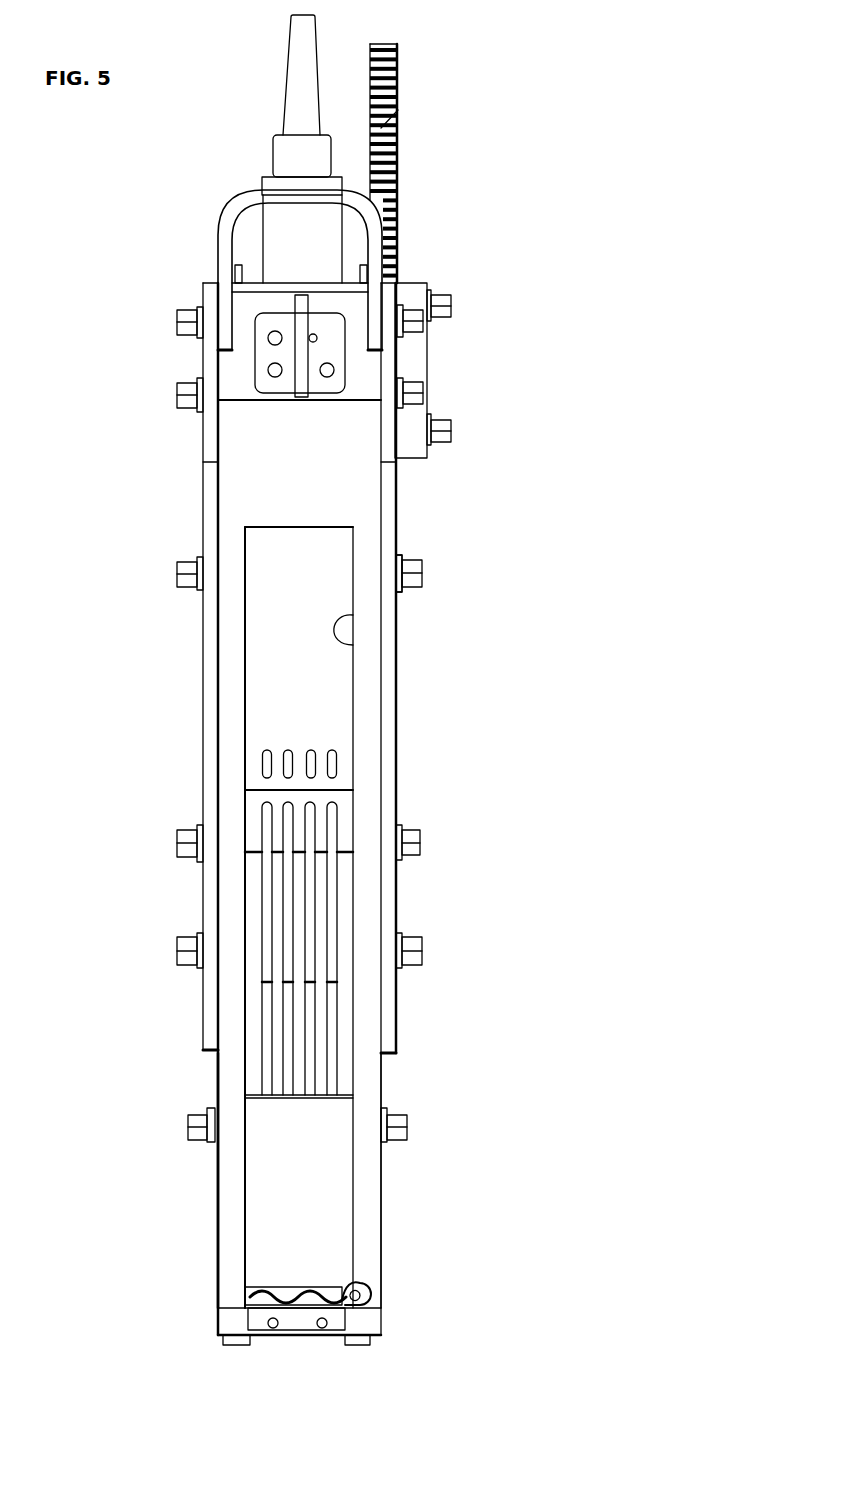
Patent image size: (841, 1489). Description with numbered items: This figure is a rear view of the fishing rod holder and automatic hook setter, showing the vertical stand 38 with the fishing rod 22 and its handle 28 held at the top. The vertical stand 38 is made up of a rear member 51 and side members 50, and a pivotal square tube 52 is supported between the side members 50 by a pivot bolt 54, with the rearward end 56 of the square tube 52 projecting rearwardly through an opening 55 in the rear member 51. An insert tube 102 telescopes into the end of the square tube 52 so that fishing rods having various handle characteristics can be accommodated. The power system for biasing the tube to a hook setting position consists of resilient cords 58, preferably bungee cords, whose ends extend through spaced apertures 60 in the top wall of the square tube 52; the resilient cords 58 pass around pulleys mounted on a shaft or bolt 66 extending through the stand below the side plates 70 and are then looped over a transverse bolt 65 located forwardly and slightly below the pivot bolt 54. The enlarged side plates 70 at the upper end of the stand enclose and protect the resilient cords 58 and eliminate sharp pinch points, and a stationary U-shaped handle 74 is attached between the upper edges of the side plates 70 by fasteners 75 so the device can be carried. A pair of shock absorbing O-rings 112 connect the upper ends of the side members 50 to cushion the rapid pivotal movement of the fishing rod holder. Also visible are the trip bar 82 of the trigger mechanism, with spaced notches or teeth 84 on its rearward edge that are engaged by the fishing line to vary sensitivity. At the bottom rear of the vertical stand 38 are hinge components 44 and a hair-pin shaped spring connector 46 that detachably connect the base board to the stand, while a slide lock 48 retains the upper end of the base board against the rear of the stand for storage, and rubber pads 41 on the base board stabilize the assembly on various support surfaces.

The fishing rod 22 is at (297, 53).
The handle 28 is at (273, 153).
The U-shaped handle 74 is at (230, 200).
The insert tube 102 is at (263, 237).
The fasteners 75 is at (178, 318).
The slide lock 48 is at (275, 353).
The shock absorbing O-rings 112 is at (285, 283).
The trip bar 82 is at (398, 72).
The notches or teeth 84 is at (398, 110).
The vertical stand 38 is at (232, 487).
The side plates 70 is at (210, 617).
The pivot bolt 54 is at (413, 580).
The opening 55 is at (353, 645).
The square tube 52 is at (327, 698).
The apertures 60 is at (263, 750).
The rearward end of the square tube 56 is at (343, 780).
The transverse bolt 65 is at (415, 835).
The resilient cords 58 is at (308, 910).
The side members 50 is at (367, 1092).
The shaft or bolt 66 is at (400, 1132).
The rear member 51 is at (287, 1163).
The hinge components 44 is at (308, 1290).
The spring connector 46 is at (360, 1288).
The pads 41 is at (237, 1347).